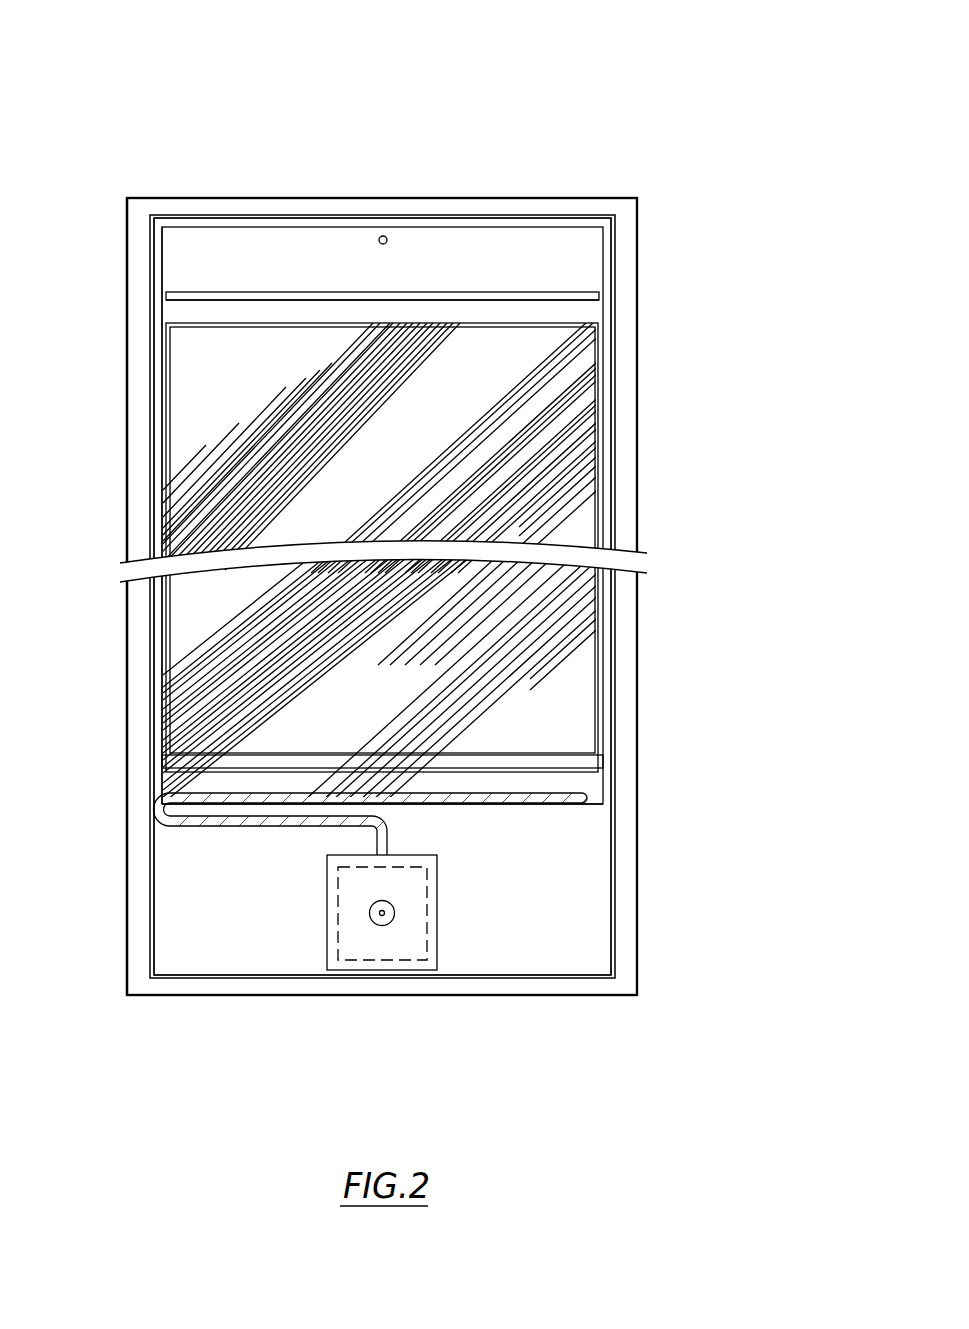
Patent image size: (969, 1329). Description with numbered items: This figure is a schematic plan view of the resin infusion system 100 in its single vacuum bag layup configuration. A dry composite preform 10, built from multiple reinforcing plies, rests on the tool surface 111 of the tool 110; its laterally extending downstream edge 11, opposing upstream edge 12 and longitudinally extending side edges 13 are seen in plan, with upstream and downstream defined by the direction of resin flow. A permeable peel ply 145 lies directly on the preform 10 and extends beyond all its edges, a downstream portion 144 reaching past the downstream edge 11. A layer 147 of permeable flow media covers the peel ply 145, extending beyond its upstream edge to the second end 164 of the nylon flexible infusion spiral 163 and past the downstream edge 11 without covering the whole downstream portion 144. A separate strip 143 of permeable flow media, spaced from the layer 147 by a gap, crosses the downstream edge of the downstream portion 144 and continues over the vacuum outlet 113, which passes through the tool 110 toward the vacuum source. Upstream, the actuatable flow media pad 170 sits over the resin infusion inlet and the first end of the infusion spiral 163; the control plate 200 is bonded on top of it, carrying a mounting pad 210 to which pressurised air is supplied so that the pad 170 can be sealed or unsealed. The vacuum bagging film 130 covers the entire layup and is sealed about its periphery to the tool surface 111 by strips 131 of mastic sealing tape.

The resin infusion system 100 is at (214, 112).
The tool 110 is at (125, 918).
The tool surface 111 is at (140, 388).
The vacuum outlet 113 is at (383, 235).
The vacuum bagging film 130 is at (588, 948).
The strips of sealing tape 131 is at (316, 217).
The strip of permeable flow media 143 is at (177, 248).
The downstream portion of the peel ply 144 is at (182, 311).
The peel ply 145 is at (165, 483).
The layer of permeable flow media 147 is at (165, 780).
The downstream edge 11 is at (598, 294).
The composite preform 10 is at (598, 514).
The side edges 13 is at (607, 445).
The upstream edge 12 is at (560, 753).
The flexible infusion spiral 163 is at (377, 843).
The second end of the flexible infusion spiral 164 is at (588, 798).
The actuatable flow media pad 170 is at (428, 913).
The control plate 200 is at (325, 900).
The mounting pad 210 is at (372, 922).